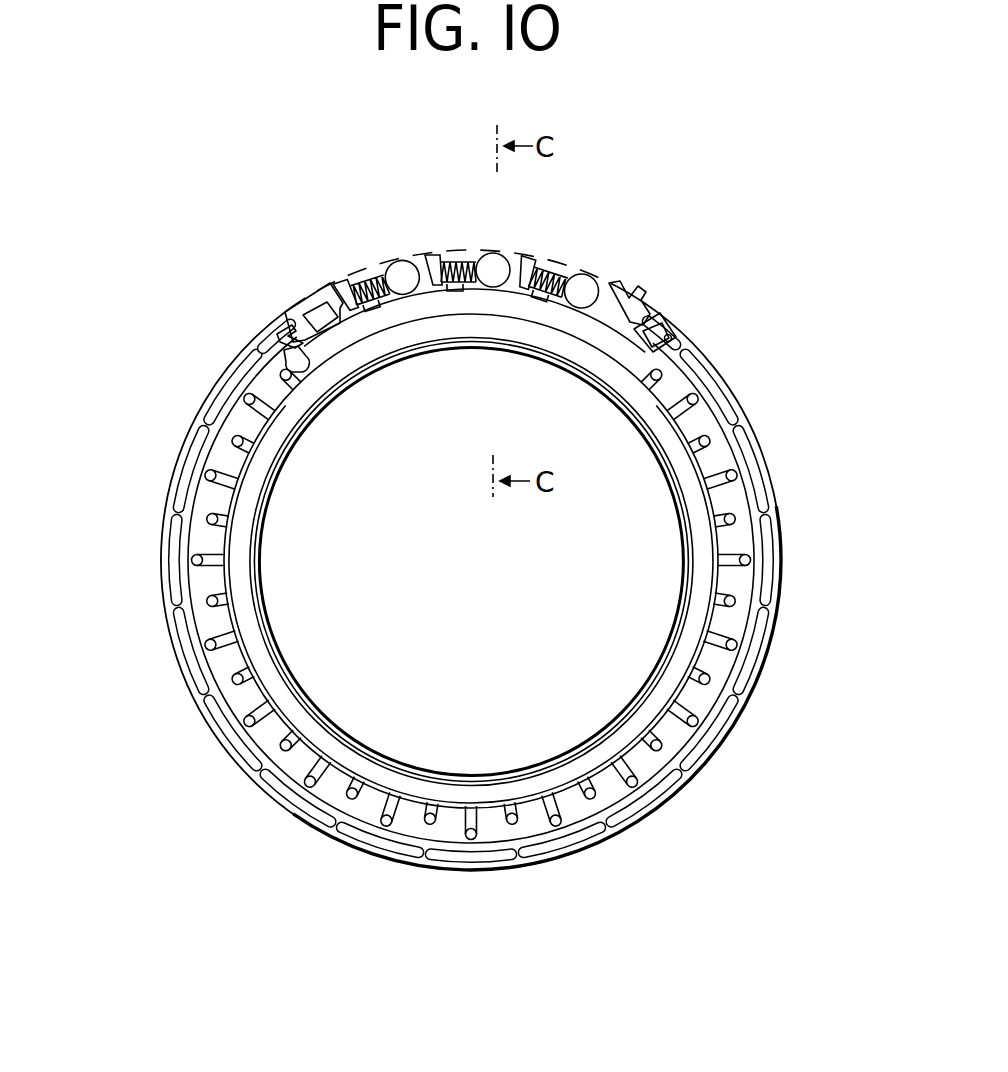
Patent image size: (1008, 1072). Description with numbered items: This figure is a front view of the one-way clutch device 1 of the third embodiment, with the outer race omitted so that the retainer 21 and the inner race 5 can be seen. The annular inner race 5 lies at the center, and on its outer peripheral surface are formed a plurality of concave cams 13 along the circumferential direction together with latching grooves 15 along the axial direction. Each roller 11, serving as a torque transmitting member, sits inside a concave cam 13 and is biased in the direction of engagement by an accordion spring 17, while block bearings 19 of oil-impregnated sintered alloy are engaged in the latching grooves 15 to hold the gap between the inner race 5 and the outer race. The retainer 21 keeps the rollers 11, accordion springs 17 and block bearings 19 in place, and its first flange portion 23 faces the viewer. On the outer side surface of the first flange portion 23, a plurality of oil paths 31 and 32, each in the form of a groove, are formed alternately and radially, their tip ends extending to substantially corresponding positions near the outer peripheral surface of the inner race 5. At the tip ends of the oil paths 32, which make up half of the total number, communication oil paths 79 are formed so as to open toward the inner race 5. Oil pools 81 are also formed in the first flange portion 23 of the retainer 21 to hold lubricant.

The one-way clutch device 1 is at (197, 296).
The inner race 5 is at (622, 355).
The roller 11 is at (585, 282).
The concave cam 13 is at (578, 305).
The latching groove 15 is at (332, 325).
The accordion spring 17 is at (556, 268).
The block bearing 19 is at (330, 331).
The retainer 21 is at (165, 493).
The first flange portion 23 is at (222, 457).
The oil path 31 is at (702, 432).
The oil path 32 is at (776, 479).
The communication oil path 79 is at (733, 473).
The oil pool 81 is at (755, 655).